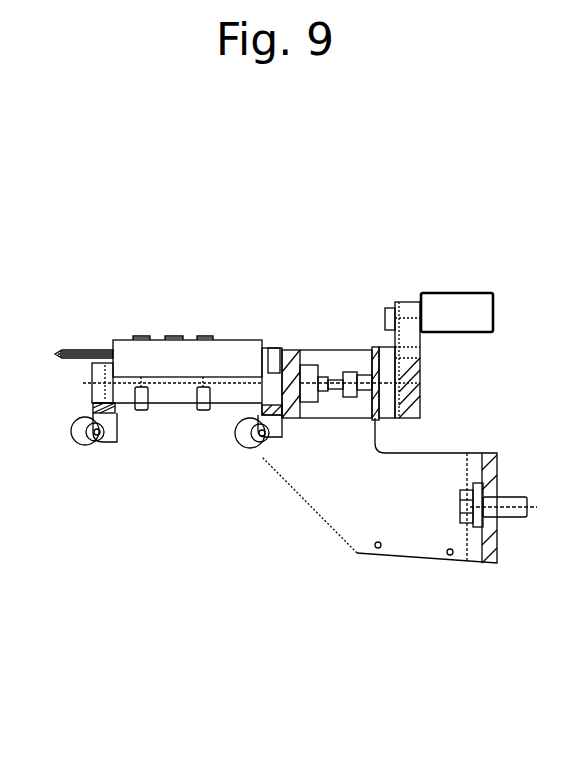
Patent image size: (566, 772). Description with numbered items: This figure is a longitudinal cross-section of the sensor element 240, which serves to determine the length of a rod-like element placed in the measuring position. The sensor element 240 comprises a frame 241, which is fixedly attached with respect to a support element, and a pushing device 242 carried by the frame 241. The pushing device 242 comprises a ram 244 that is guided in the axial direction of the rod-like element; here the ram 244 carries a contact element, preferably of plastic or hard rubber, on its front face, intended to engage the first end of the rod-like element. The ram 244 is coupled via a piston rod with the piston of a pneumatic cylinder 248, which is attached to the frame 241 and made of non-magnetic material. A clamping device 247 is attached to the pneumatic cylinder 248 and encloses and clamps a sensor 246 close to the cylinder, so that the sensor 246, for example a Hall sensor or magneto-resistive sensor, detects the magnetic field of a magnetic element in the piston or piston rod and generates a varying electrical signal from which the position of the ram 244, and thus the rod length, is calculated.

The sensor element 240 is at (193, 612).
The frame 241 is at (403, 532).
The pushing device 242 is at (243, 230).
The ram 244 is at (428, 297).
The sensor 246 is at (157, 318).
The clamping device 247 is at (193, 363).
The pneumatic cylinder 248 is at (232, 392).